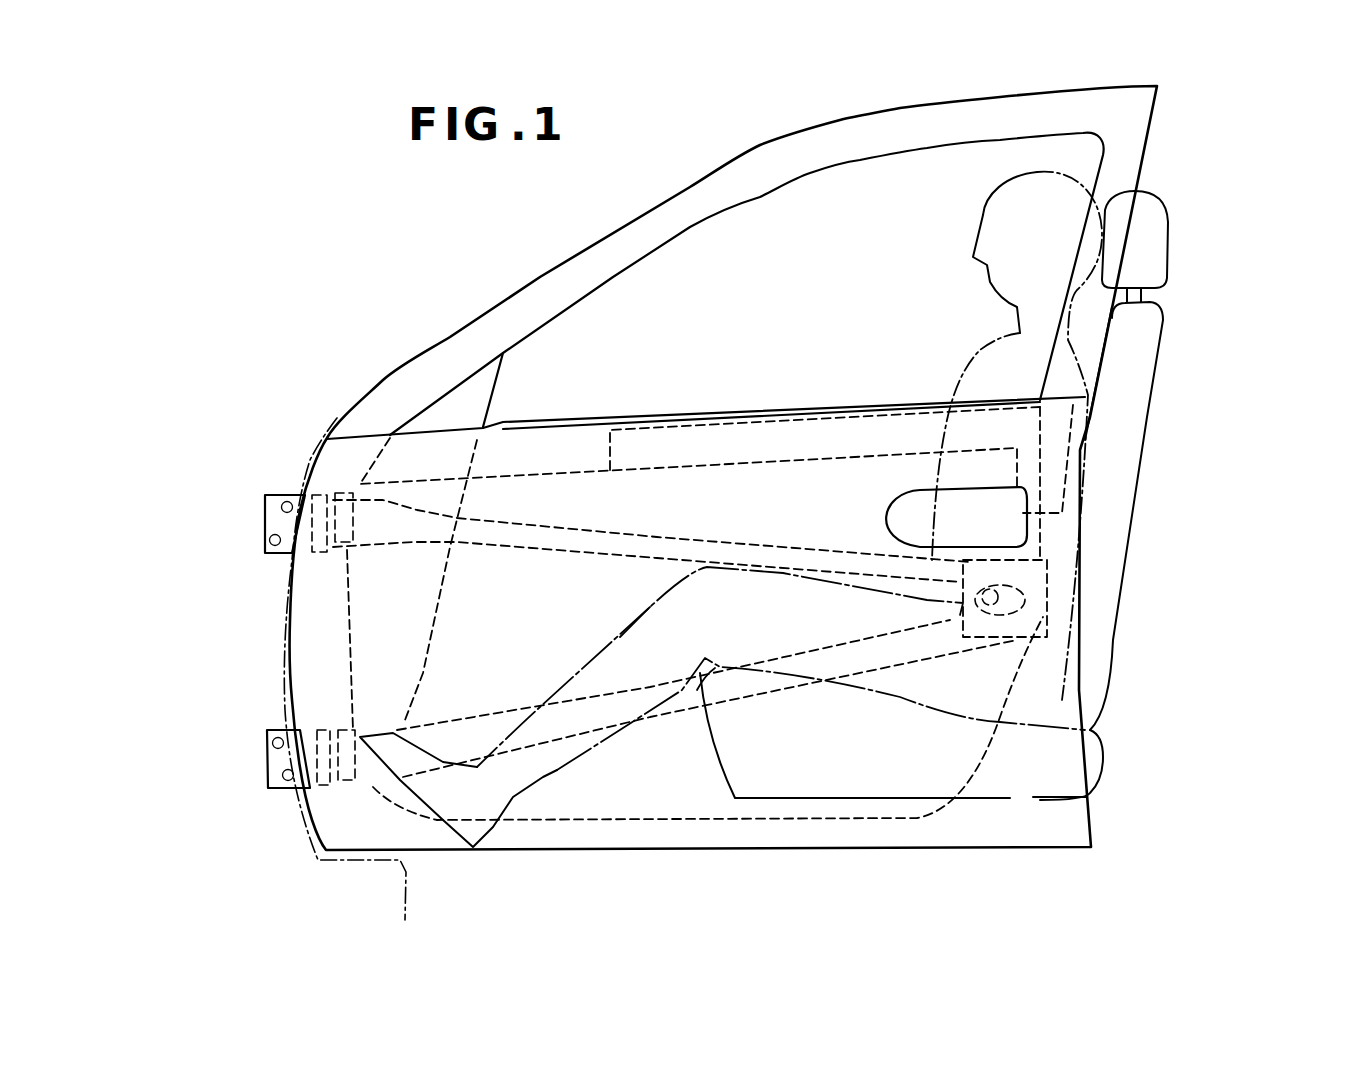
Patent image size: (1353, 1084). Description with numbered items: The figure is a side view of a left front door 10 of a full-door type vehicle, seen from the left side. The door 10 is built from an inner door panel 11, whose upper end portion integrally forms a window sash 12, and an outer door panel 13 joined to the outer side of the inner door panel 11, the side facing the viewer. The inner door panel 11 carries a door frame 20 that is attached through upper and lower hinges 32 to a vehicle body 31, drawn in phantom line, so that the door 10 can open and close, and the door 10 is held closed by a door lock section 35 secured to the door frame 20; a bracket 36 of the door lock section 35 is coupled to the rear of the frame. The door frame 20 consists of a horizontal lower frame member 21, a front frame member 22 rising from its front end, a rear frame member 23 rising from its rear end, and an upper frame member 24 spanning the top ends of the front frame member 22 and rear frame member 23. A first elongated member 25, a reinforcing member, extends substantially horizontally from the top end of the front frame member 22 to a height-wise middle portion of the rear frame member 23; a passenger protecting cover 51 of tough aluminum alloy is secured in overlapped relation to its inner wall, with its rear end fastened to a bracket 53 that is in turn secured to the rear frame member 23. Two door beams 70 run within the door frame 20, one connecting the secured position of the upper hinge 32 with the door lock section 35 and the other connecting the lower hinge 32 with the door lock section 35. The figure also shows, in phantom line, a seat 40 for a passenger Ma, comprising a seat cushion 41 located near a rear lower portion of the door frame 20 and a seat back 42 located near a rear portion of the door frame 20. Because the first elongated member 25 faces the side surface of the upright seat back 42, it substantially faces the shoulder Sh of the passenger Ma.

The left front door 10 is at (205, 344).
The inner door panel 11 is at (812, 800).
The door frame 20 is at (720, 512).
The window sash 12 is at (1205, 393).
The outer door panel 13 is at (703, 768).
The lower frame member 21 is at (642, 812).
The front frame member 22 is at (350, 643).
The rear frame member 23 is at (1027, 540).
The upper frame member 24 is at (690, 235).
The first elongated member 25 is at (503, 478).
The vehicle body 31 is at (375, 385).
The hinge 32 is at (265, 523).
The door lock section 35 is at (977, 618).
The bracket of the door lock section 36 is at (1043, 603).
The seat 40 is at (1228, 657).
The seat cushion 41 is at (1103, 757).
The seat back 42 is at (1113, 650).
The passenger protecting cover 51 is at (610, 470).
The bracket 53 is at (1063, 474).
The door beam 70 is at (547, 550).
The passenger Ma is at (978, 213).
The shoulder Sh is at (977, 370).